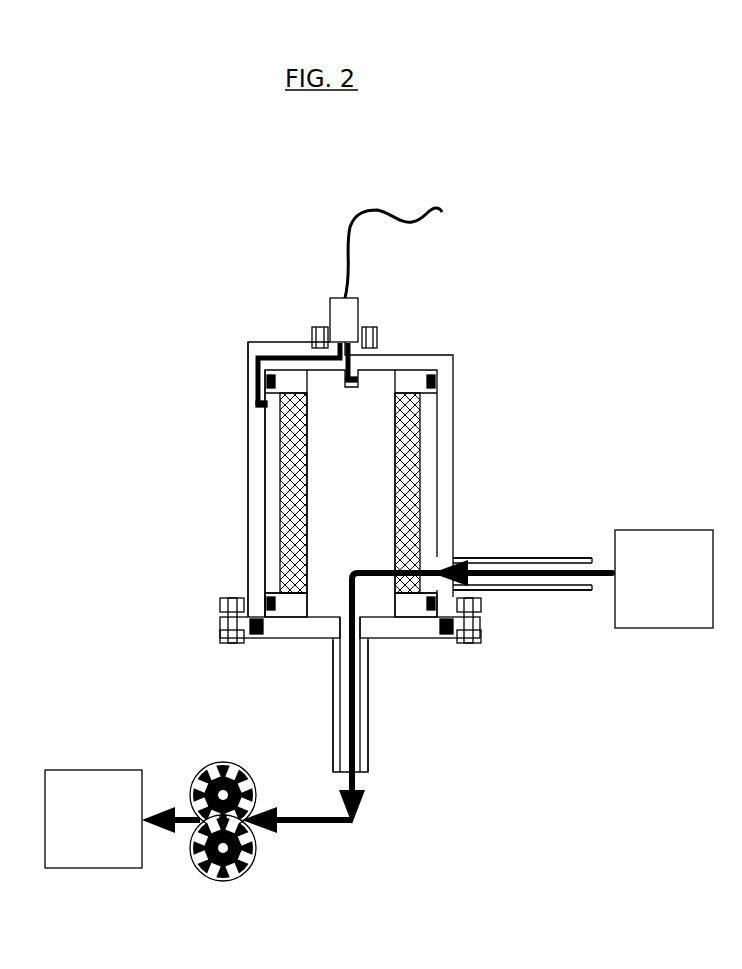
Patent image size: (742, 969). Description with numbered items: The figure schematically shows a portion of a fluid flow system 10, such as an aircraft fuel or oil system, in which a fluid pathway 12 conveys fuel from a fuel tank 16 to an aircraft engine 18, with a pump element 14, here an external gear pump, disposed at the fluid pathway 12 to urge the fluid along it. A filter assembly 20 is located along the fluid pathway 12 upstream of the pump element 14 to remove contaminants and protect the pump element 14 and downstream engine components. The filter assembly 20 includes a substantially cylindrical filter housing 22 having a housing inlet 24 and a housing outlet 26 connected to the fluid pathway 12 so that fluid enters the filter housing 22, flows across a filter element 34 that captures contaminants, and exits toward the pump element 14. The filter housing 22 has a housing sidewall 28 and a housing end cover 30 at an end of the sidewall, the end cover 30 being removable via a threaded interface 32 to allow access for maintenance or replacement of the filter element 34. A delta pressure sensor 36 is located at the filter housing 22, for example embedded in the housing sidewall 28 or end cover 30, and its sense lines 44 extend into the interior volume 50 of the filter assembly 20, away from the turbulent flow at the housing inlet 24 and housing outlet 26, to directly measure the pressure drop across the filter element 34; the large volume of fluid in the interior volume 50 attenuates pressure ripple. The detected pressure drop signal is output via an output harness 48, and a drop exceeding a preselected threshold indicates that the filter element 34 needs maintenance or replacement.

The fluid flow system 10 is at (72, 321).
The fluid pathway 12 is at (577, 557).
The pump element 14 is at (198, 868).
The fuel tank 16 is at (664, 590).
The aircraft engine 18 is at (72, 847).
The filter assembly 20 is at (292, 605).
The filter housing 22 is at (453, 393).
The housing inlet 24 is at (437, 557).
The housing outlet 26 is at (335, 632).
The housing sidewall 28 is at (248, 437).
The housing end cover 30 is at (413, 638).
The threaded interface 32 is at (470, 627).
The filter element 34 is at (400, 436).
The delta pressure sensor 36 is at (328, 308).
The sense lines 44 is at (258, 386).
The output harness 48 is at (352, 223).
The interior volume 50 is at (373, 544).